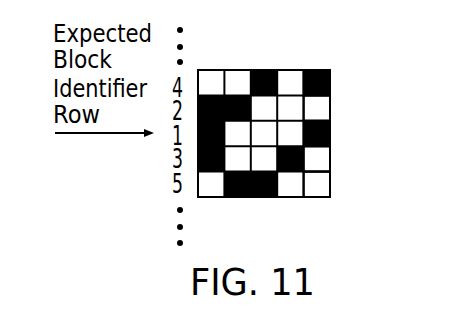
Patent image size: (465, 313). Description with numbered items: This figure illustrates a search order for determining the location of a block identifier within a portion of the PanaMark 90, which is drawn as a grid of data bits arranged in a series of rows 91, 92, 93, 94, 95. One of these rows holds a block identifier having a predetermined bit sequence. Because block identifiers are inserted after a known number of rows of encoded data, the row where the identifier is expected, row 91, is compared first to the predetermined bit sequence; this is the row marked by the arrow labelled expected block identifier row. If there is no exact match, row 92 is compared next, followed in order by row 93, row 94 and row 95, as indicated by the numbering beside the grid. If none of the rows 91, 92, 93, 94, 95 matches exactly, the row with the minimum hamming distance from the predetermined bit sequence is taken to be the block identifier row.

The PanaMark 90 is at (343, 64).
The row 91 is at (330, 133).
The row 92 is at (328, 113).
The row 93 is at (328, 161).
The row 94 is at (328, 85).
The row 95 is at (328, 186).